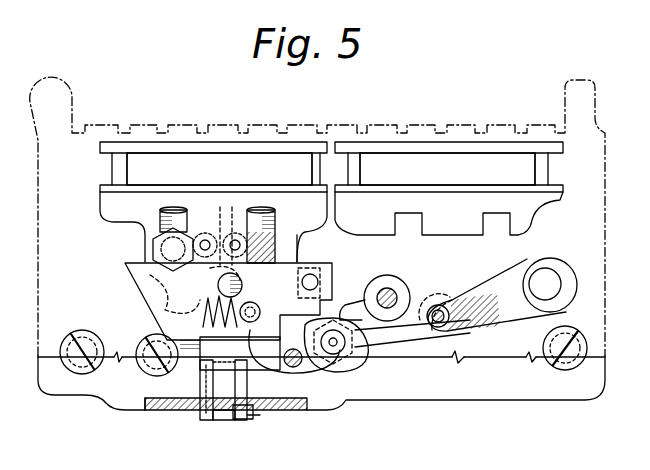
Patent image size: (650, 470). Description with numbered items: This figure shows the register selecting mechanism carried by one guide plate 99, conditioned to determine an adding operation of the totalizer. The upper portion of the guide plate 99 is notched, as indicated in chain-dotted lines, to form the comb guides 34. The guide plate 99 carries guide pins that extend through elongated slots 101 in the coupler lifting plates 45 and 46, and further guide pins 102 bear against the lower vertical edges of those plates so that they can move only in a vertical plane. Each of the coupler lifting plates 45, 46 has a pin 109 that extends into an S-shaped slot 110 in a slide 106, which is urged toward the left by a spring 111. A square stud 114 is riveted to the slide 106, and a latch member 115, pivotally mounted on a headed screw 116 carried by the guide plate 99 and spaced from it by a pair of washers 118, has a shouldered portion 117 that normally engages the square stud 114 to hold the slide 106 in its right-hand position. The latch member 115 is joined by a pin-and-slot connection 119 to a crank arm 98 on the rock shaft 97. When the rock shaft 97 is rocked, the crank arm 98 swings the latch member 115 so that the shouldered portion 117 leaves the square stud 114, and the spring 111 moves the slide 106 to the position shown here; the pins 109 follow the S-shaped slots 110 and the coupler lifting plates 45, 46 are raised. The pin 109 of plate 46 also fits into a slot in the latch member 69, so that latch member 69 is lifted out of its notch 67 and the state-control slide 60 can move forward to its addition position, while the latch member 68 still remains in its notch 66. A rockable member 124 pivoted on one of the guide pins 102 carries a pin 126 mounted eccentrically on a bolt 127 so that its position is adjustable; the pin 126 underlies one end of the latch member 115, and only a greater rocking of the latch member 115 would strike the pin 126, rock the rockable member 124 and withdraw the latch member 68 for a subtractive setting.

The comb guides 34 is at (228, 124).
The coupler lifting plate 45 is at (458, 147).
The coupler lifting plate 46 is at (234, 146).
The state-control slide 60 is at (245, 418).
The notch 66 is at (180, 416).
The notch 67 is at (258, 417).
The latch member 68 is at (200, 425).
The latch member 69 is at (303, 365).
The rock shaft 97 is at (551, 278).
The crank arm 98 is at (522, 316).
The guide plate 99 is at (472, 395).
The elongated slot 101 is at (318, 219).
The guide pin 102 is at (152, 370).
The slide 106 is at (132, 292).
The pin 109 is at (242, 284).
The S-shaped slot 110 is at (172, 322).
The spring 111 is at (256, 305).
The square stud 114 is at (336, 262).
The latch member 115 is at (430, 340).
The headed screw 116 is at (389, 290).
The shouldered portion 117 is at (345, 304).
The washers 118 is at (380, 276).
The pin-and-slot connection 119 is at (443, 303).
The rockable member 124 is at (210, 422).
The pin 126 is at (340, 362).
The bolt 127 is at (358, 360).